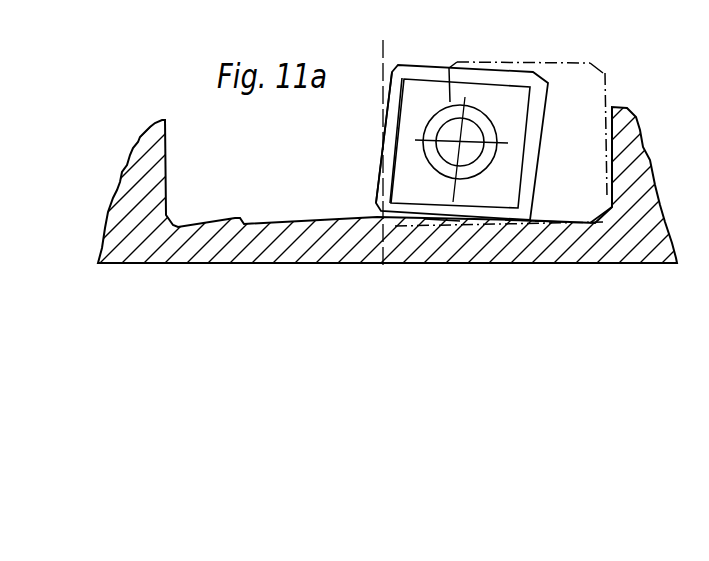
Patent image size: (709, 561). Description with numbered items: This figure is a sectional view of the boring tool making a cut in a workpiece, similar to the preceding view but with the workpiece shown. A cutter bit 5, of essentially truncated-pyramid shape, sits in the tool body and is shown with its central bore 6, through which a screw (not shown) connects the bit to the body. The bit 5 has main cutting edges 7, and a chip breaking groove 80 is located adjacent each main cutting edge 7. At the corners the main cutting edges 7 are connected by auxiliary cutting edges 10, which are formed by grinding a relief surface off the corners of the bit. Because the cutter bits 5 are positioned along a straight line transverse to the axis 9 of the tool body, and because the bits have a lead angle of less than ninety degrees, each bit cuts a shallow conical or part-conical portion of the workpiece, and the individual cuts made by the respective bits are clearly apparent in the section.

The cutter bit 5 is at (414, 92).
The central bore 6 is at (468, 138).
The main cutting edge 7 is at (442, 222).
The axis of the body 9 is at (383, 52).
The auxiliary cutting edge 10 is at (522, 223).
The chip breaking groove 80 is at (393, 120).